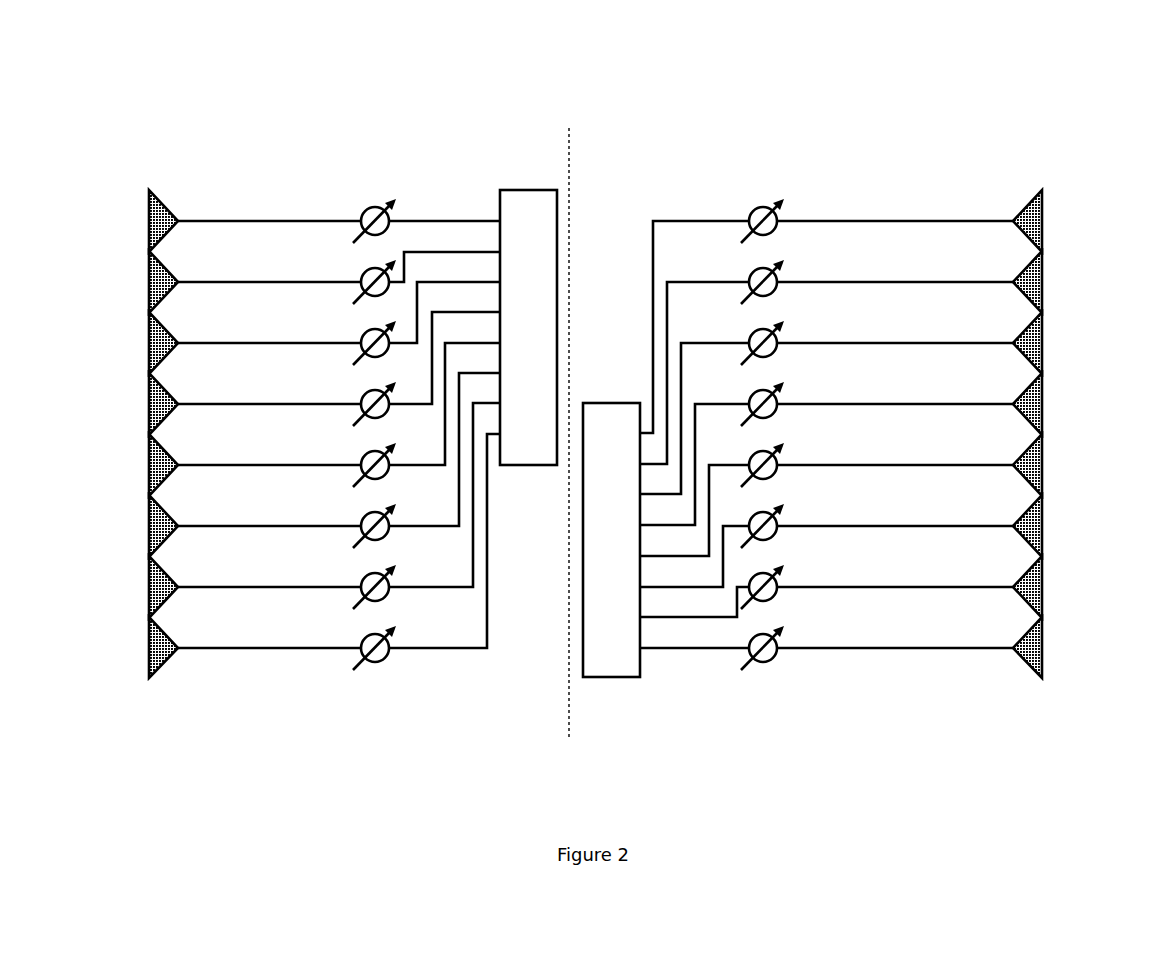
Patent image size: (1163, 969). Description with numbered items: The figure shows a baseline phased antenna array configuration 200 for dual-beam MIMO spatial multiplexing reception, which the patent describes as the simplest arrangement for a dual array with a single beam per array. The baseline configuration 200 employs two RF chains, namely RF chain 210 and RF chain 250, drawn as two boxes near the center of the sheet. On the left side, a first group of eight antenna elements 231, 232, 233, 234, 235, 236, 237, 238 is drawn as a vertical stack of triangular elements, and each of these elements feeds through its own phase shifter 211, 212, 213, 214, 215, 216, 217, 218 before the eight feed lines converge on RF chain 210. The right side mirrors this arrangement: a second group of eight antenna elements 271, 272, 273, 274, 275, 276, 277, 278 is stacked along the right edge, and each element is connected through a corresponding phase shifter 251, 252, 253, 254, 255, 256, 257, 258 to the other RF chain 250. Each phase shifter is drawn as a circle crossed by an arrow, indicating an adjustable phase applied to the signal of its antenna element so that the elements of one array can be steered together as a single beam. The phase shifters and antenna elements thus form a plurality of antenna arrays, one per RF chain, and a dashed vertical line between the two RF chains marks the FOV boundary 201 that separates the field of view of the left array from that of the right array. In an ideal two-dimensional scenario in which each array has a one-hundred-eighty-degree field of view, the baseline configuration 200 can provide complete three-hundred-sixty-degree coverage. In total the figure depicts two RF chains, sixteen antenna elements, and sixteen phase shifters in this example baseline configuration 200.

The baseline phased antenna array configuration 200 is at (1007, 100).
The FOV boundary 201 is at (571, 424).
The RF chain 210 is at (308, 365).
The RF chain 250 is at (863, 488).
The phase shifter 211 is at (339, 215).
The phase shifter 212 is at (339, 276).
The phase shifter 213 is at (339, 323).
The phase shifter 214 is at (339, 369).
The phase shifter 215 is at (339, 415).
The phase shifter 216 is at (339, 460).
The phase shifter 217 is at (339, 506).
The phase shifter 218 is at (339, 552).
The antenna element 231 is at (118, 221).
The antenna element 232 is at (118, 282).
The antenna element 233 is at (118, 343).
The antenna element 234 is at (118, 404).
The antenna element 235 is at (118, 465).
The antenna element 236 is at (118, 526).
The antenna element 237 is at (118, 587).
The antenna element 238 is at (118, 647).
The phase shifter 251 is at (826, 310).
The phase shifter 252 is at (826, 356).
The phase shifter 253 is at (826, 402).
The phase shifter 254 is at (826, 448).
The phase shifter 255 is at (826, 494).
The phase shifter 256 is at (826, 540).
The phase shifter 257 is at (826, 585).
The phase shifter 258 is at (826, 642).
The antenna element 271 is at (1078, 221).
The antenna element 272 is at (1078, 282).
The antenna element 273 is at (1078, 343).
The antenna element 274 is at (1078, 404).
The antenna element 275 is at (1078, 465).
The antenna element 276 is at (1078, 526).
The antenna element 277 is at (1078, 587).
The antenna element 278 is at (1078, 647).